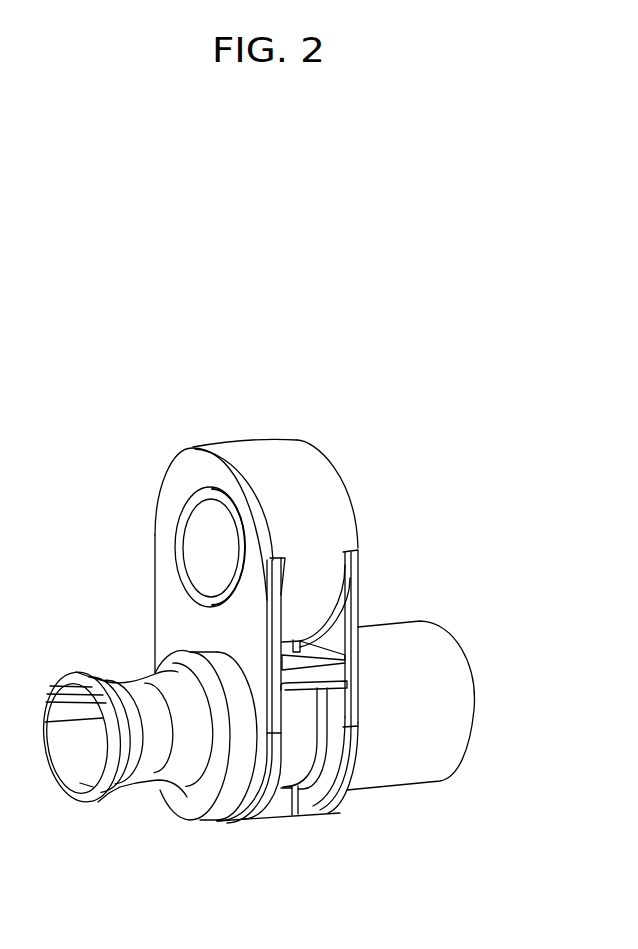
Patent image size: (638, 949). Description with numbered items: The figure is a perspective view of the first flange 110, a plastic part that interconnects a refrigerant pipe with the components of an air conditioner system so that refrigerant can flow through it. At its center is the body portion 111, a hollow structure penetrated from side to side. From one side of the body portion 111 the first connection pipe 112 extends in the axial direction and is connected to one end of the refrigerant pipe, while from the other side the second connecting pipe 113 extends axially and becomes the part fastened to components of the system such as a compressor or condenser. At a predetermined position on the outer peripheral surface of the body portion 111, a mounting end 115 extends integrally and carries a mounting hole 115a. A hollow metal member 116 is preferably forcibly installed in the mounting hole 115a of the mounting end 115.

The first flange 110 is at (381, 403).
The body portion 111 is at (223, 800).
The first connection pipe 112 is at (432, 810).
The second connecting pipe 113 is at (88, 818).
The mounting end 115 is at (143, 556).
The mounting hole 115a is at (240, 555).
The hollow metal member 116 is at (196, 500).